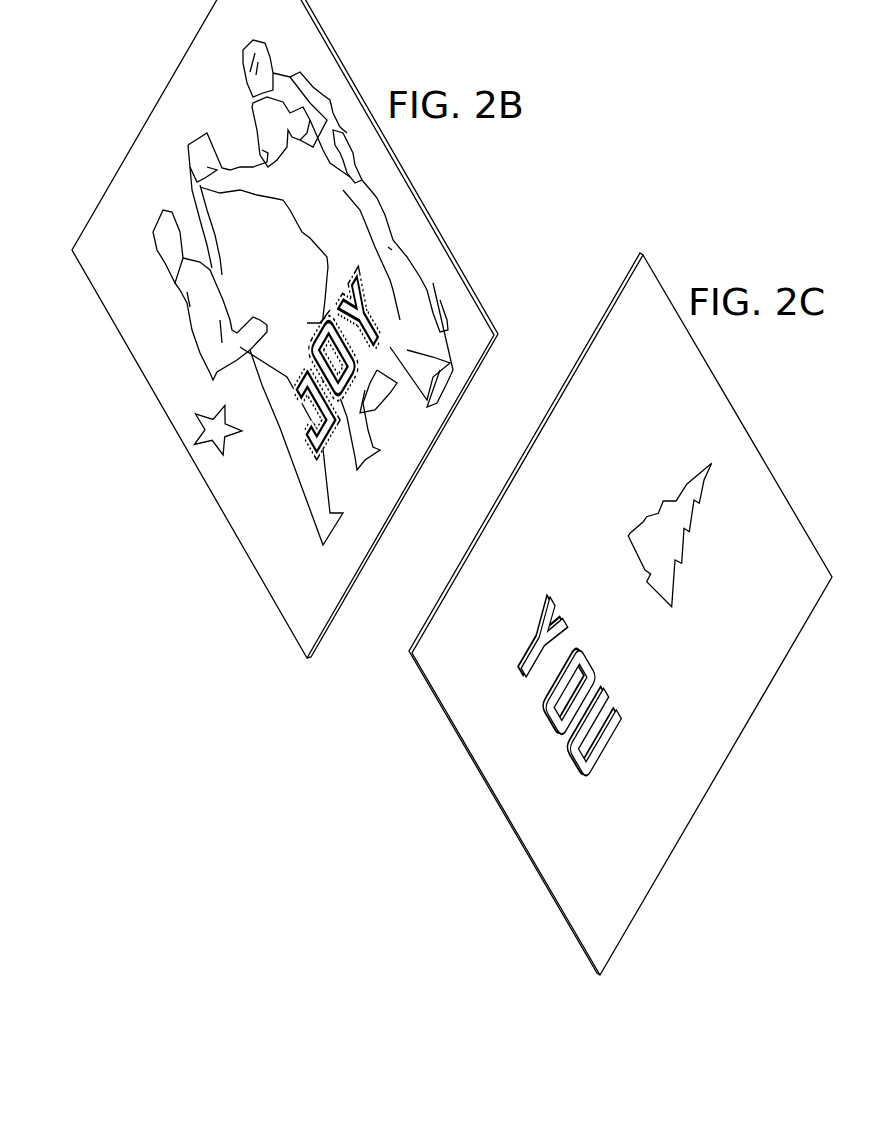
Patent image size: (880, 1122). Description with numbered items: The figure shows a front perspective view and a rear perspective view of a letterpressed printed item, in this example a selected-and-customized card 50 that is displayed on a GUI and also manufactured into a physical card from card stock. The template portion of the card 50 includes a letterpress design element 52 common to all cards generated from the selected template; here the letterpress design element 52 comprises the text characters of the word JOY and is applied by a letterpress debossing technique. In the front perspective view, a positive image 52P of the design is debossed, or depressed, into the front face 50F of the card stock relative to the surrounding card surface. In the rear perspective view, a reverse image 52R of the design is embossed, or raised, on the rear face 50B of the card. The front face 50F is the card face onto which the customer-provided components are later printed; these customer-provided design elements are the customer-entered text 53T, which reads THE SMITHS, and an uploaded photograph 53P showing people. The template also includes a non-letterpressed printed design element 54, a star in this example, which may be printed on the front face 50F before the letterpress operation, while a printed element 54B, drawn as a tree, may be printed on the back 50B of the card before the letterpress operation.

In FIG. 2B, the card 50 is at (285, 333).
In FIG. 2C, the card 50 is at (603, 614).
In FIG. 2B, the front face 50F is at (303, 612).
In FIG. 2C, the front face 50F is at (432, 692).
In FIG. 2B, the rear face 50B is at (337, 621).
In FIG. 2C, the rear face 50B is at (448, 677).
In FIG. 2B, the letterpress design element 52 is at (263, 407).
In FIG. 2B, the positive image 52P is at (305, 449).
In FIG. 2C, the reverse image 52R is at (537, 642).
In FIG. 2B, the customer-entered text 53T is at (82, 262).
In FIG. 2B, the uploaded photograph 53P is at (180, 297).
In FIG. 2B, the printed design element 54 is at (205, 438).
In FIG. 2C, the printed element 54B is at (633, 537).